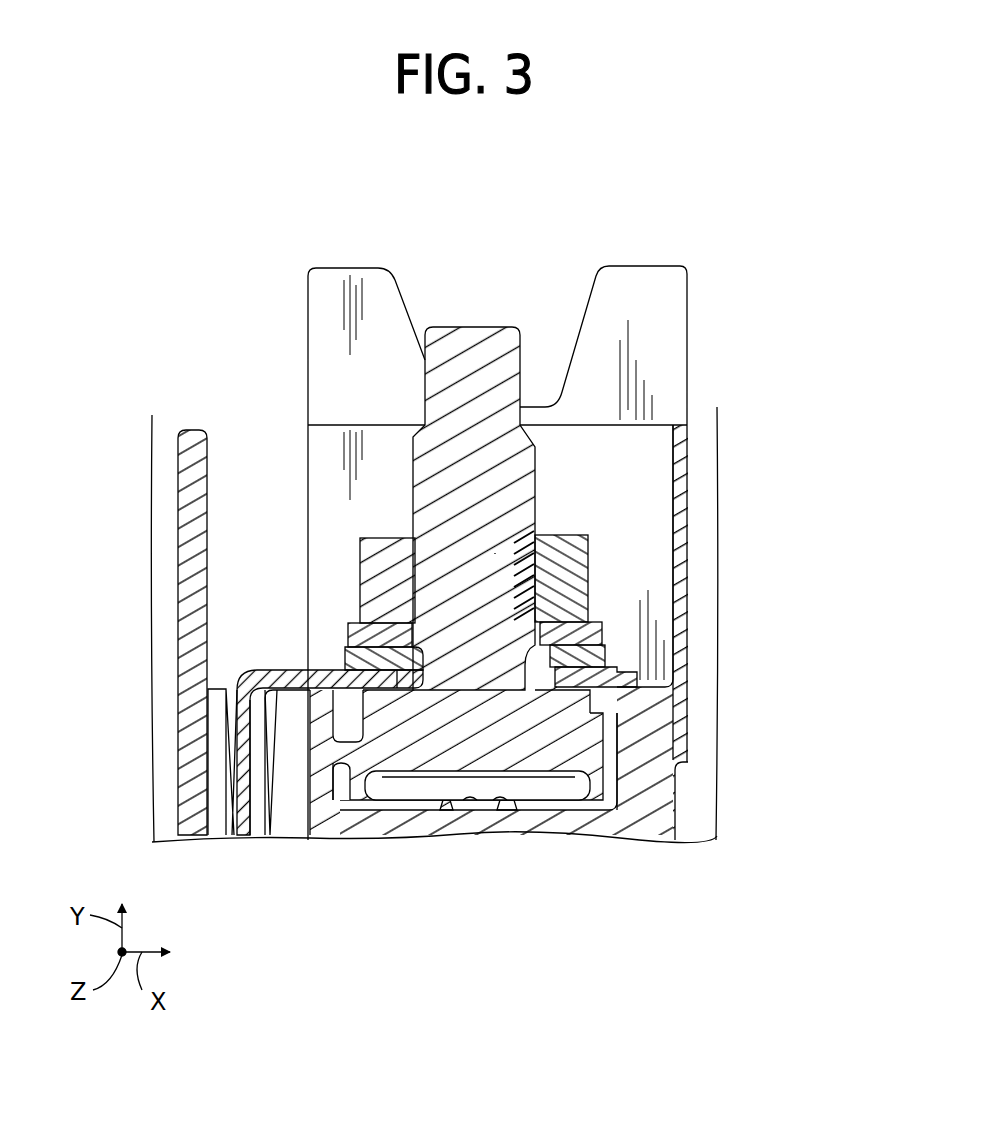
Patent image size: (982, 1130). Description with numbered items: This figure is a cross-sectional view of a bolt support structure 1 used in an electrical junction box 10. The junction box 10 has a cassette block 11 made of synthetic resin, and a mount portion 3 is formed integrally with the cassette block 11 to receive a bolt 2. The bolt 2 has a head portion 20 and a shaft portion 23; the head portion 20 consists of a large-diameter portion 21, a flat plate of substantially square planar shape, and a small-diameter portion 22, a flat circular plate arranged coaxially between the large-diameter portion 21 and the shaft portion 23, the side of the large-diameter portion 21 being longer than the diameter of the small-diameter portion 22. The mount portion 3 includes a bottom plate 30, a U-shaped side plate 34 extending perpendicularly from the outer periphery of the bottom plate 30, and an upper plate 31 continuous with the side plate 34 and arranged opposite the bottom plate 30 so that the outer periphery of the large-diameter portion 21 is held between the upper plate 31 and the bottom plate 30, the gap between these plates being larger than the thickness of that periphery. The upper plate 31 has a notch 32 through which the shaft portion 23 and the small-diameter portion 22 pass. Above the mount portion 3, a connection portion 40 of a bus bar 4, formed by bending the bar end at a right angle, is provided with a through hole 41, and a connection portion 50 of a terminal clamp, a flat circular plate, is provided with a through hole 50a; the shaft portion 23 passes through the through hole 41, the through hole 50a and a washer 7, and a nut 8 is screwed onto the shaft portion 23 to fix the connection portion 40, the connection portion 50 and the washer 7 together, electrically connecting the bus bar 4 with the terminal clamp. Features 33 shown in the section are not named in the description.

The bolt support structure 1 is at (618, 432).
The bolt 2 is at (471, 320).
The mount portion 3 is at (332, 626).
The bus bar 4 is at (276, 667).
The washer 7 is at (565, 625).
The nut 8 is at (572, 535).
The electrical junction box 10 is at (750, 155).
The cassette block 11 is at (694, 393).
The head portion 20 is at (762, 700).
The large-diameter portion 21 is at (623, 760).
The small-diameter portion 22 is at (560, 705).
The shaft portion 23 is at (493, 552).
The bottom plate 30 is at (395, 800).
The upper plate 31 is at (340, 675).
The notch 32 is at (345, 668).
The protrusions 33 is at (497, 800).
The side plate 34 is at (350, 802).
The connection portion 40 is at (625, 684).
The through hole 41 is at (592, 640).
The connection portion 50 is at (407, 650).
The through hole 50a is at (411, 630).